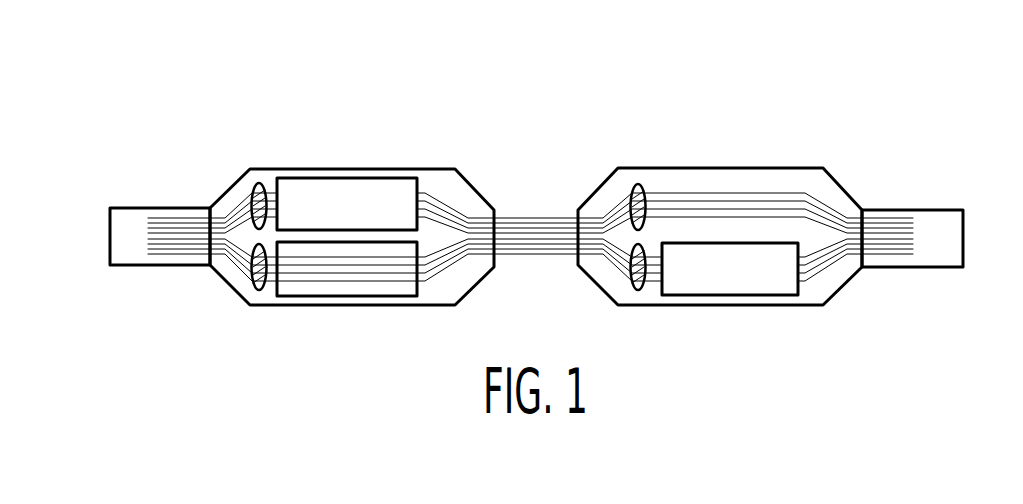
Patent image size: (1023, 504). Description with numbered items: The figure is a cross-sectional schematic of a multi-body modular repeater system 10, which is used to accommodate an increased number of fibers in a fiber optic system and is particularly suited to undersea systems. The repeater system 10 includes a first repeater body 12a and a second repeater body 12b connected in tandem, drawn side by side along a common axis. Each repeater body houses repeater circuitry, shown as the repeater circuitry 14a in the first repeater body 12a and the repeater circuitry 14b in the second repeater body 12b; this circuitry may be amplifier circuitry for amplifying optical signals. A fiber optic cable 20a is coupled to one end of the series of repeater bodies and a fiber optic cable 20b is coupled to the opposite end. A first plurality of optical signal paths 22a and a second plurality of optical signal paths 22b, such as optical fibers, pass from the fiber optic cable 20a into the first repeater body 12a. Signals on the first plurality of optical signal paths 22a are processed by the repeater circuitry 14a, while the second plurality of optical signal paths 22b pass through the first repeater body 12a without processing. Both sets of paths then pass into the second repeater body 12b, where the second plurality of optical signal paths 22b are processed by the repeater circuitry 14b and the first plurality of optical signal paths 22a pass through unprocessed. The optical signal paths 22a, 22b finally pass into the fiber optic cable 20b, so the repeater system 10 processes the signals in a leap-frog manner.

The multi-body modular repeater system 10 is at (571, 97).
The first repeater body 12a is at (260, 168).
The second repeater body 12b is at (640, 168).
The repeater circuitry 14a is at (327, 218).
The repeater circuitry 14b is at (710, 281).
The fiber optic cable 20a is at (133, 266).
The fiber optic cable 20b is at (910, 268).
The first plurality of optical signal paths 22a is at (253, 190).
The second plurality of optical signal paths 22b is at (261, 291).